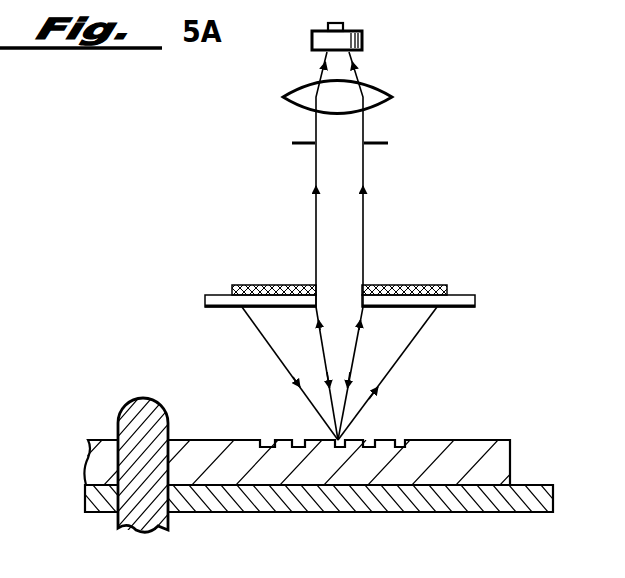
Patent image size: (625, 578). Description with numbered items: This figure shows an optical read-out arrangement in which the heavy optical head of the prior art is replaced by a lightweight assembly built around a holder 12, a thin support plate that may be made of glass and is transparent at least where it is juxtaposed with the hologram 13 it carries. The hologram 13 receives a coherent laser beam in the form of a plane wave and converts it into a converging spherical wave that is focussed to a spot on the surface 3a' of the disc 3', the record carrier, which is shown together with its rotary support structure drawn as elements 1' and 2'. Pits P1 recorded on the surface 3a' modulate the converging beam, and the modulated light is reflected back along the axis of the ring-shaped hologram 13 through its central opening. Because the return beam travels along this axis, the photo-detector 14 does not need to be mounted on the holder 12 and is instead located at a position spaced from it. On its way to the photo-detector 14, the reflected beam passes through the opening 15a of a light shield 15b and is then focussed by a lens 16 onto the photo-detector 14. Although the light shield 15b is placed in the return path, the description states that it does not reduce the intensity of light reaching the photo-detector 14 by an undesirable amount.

The stylus 1' is at (150, 443).
The base plate 2' is at (331, 499).
The disc 3' is at (307, 456).
The surface of disc 3a' is at (422, 419).
The pits P1 is at (286, 428).
The holder 12 is at (476, 300).
The hologram 13 is at (443, 286).
The photo-detector 14 is at (363, 41).
The opening 15a is at (378, 138).
The light shield 15b is at (372, 160).
The lens 16 is at (393, 97).